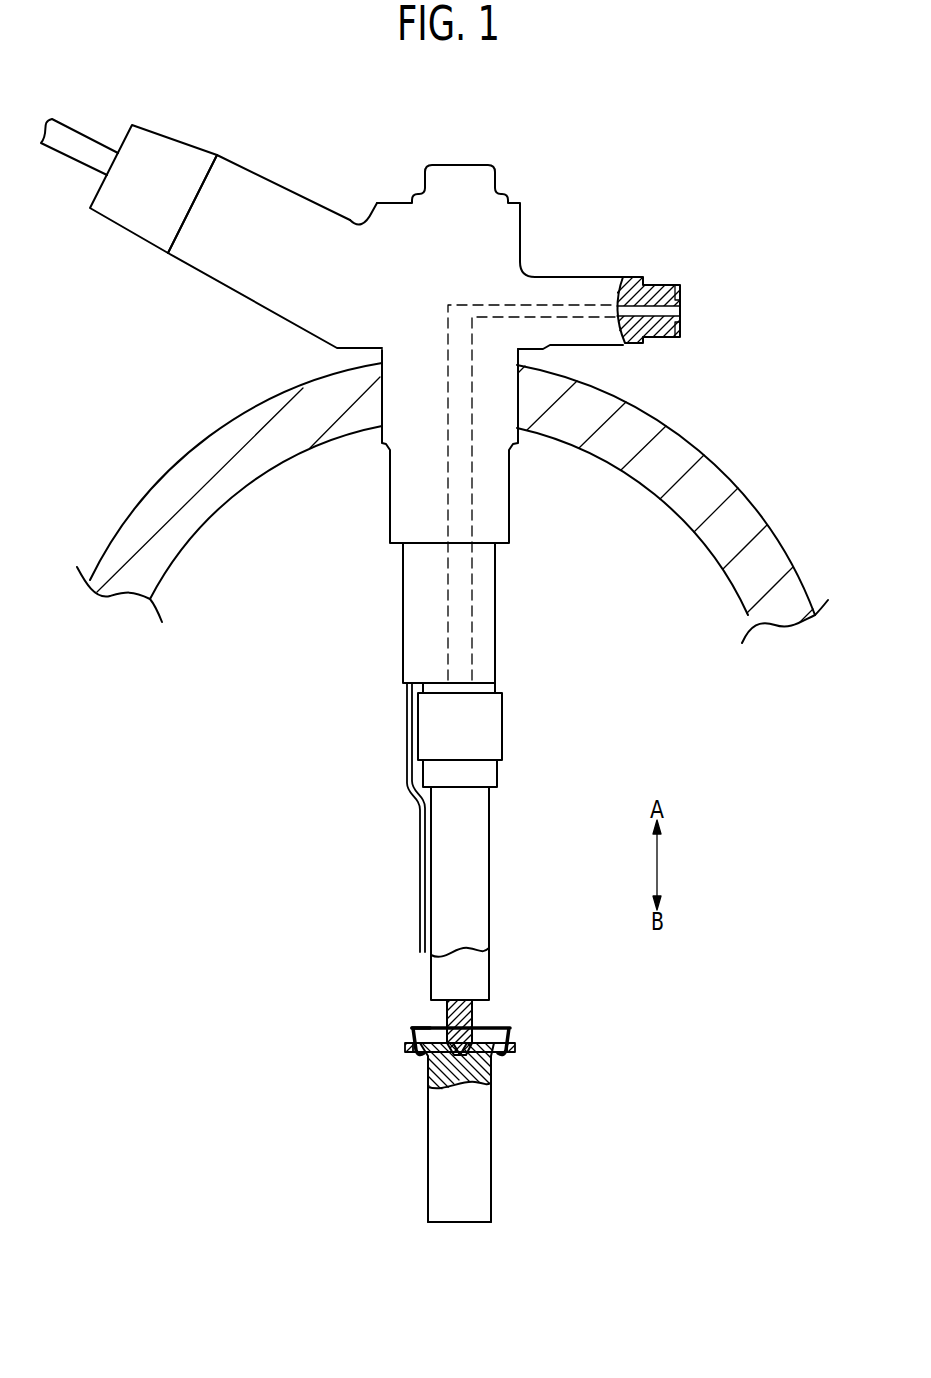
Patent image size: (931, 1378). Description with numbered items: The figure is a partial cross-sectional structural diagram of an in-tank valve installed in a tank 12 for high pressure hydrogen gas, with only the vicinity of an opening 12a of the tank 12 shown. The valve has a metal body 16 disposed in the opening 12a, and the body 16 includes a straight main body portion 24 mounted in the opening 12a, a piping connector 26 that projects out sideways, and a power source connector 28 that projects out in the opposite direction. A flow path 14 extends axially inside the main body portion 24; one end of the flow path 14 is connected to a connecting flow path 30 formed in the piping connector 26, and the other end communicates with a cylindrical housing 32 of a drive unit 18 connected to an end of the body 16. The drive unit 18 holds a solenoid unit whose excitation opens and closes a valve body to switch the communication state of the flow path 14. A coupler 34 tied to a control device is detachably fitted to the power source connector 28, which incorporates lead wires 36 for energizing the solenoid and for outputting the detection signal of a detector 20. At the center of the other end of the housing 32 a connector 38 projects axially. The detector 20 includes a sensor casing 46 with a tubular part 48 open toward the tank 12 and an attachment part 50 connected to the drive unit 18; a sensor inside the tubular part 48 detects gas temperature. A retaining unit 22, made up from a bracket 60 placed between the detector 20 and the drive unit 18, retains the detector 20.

The tank 12 is at (672, 410).
The opening 12a is at (383, 403).
The flow path 14 is at (458, 486).
The body 16 is at (527, 211).
The drive unit 18 is at (518, 745).
The detector 20 is at (502, 1123).
The retaining unit 22 is at (508, 1020).
The main body portion 24 is at (405, 480).
The piping connector 26 is at (599, 292).
The power source connector 28 is at (257, 293).
The connecting flow path 30 is at (668, 312).
The housing 32 is at (473, 862).
The coupler 34 is at (152, 158).
The lead wires 36 is at (422, 826).
The connector 38 is at (450, 1020).
The sensor casing 46 is at (447, 1130).
The tubular part 48 is at (462, 1202).
The attachment part 50 is at (512, 1048).
The bracket 60 is at (410, 1027).